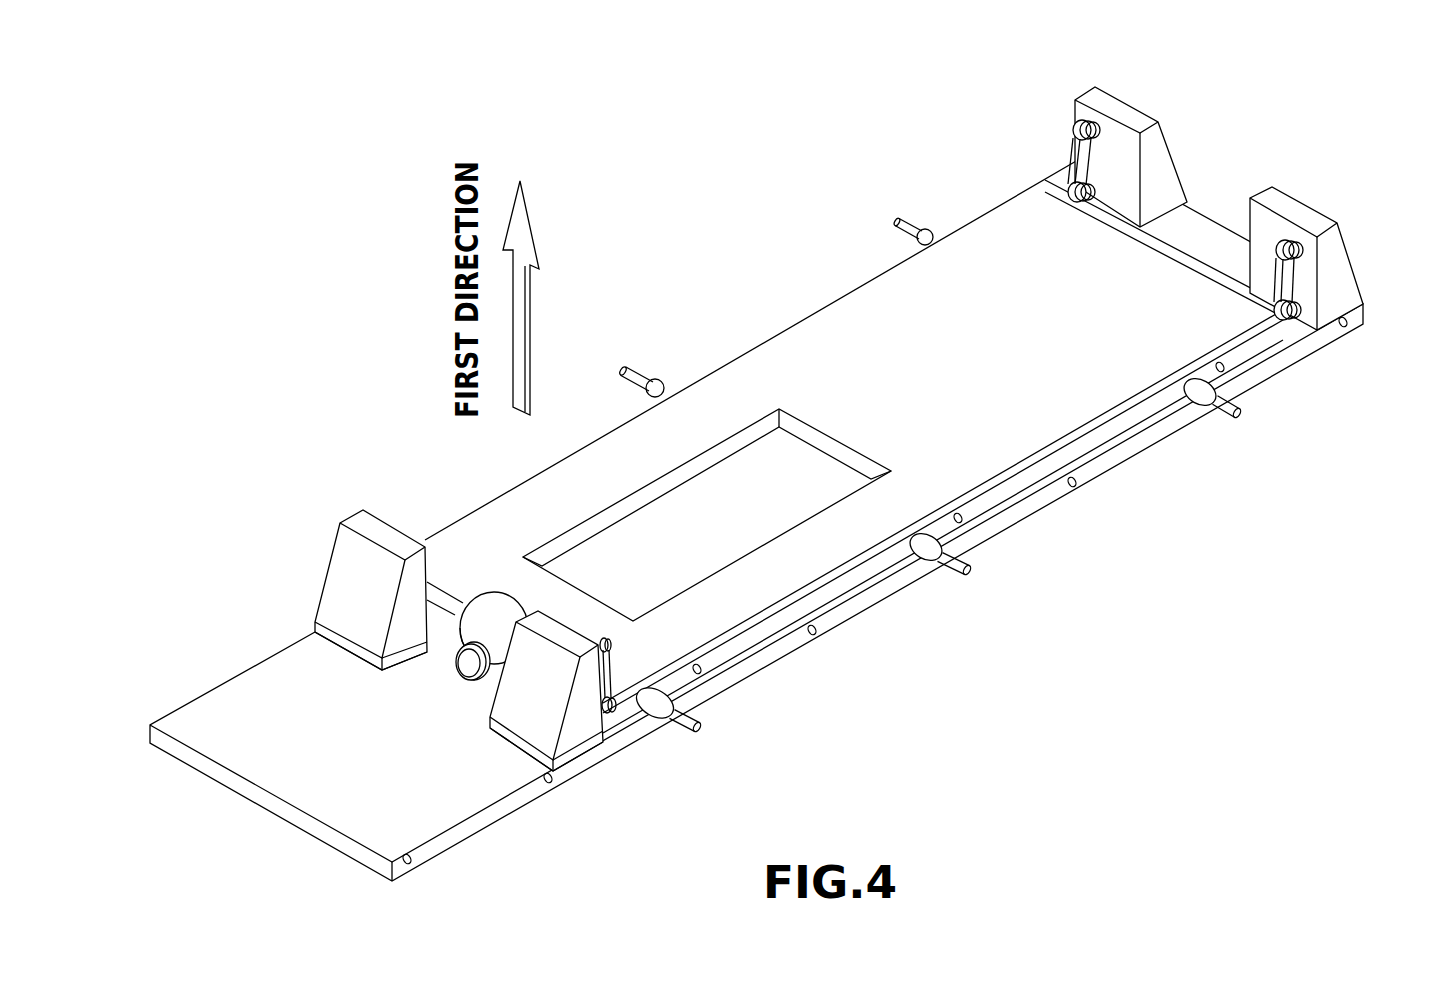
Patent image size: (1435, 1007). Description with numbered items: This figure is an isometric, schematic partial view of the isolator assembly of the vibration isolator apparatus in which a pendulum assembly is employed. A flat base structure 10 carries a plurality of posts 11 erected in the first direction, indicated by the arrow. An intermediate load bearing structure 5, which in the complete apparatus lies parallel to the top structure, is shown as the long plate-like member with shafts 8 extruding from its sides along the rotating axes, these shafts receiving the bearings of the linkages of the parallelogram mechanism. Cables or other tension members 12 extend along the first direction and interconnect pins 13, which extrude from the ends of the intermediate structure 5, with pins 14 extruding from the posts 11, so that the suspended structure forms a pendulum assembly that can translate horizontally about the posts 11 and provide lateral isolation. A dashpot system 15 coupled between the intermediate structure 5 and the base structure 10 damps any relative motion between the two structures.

The intermediate load bearing structure 5 is at (1140, 386).
The shaft 8 is at (928, 238).
The base structure 10 is at (248, 710).
The post 11 is at (349, 578).
The cable or tension member 12 is at (613, 693).
The pin 13 is at (612, 702).
The pin 14 is at (607, 650).
The dashpot system 15 is at (468, 663).